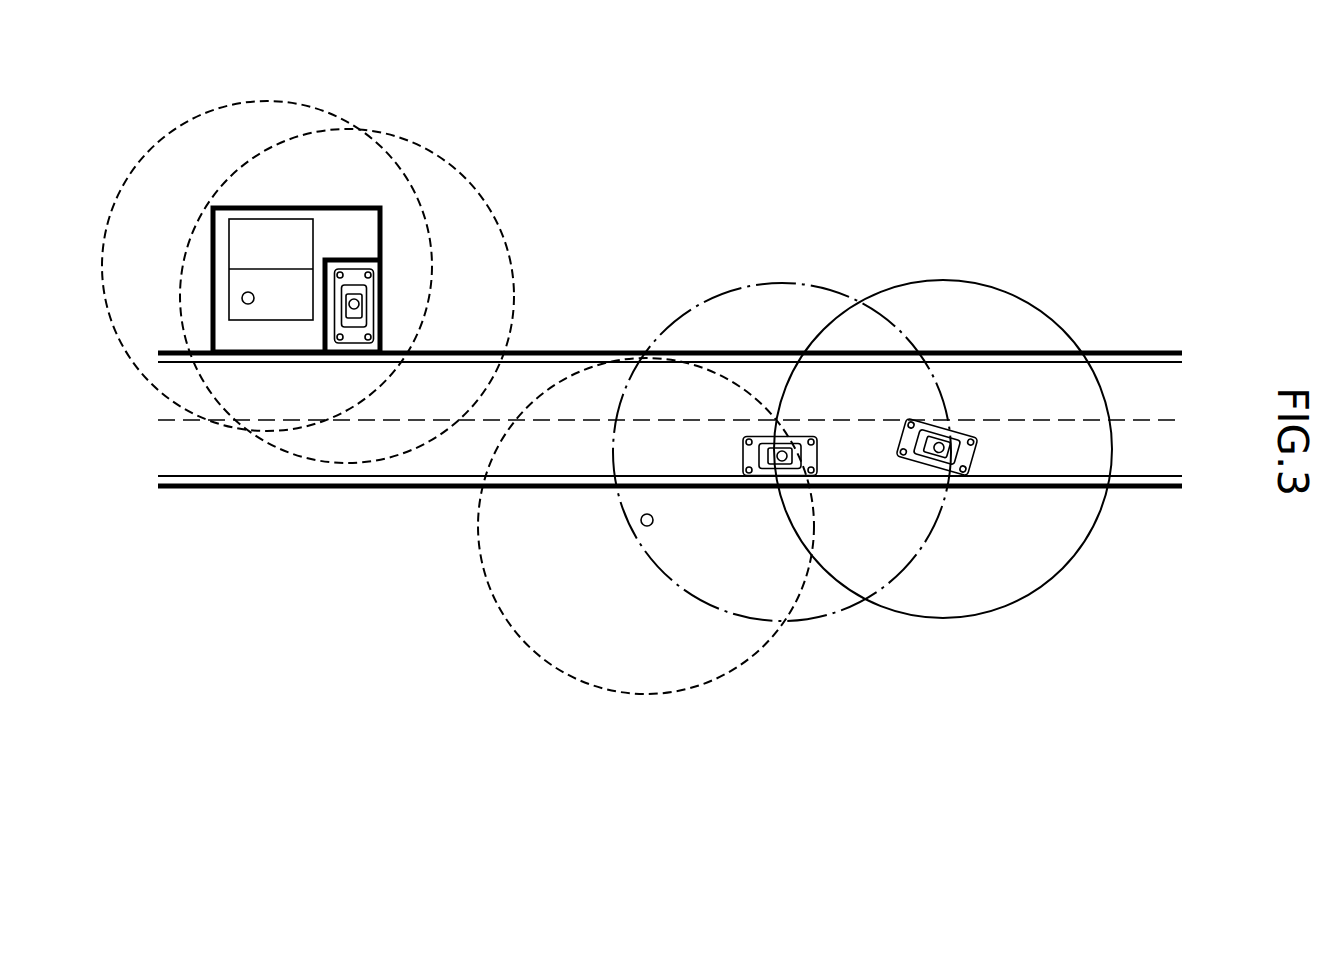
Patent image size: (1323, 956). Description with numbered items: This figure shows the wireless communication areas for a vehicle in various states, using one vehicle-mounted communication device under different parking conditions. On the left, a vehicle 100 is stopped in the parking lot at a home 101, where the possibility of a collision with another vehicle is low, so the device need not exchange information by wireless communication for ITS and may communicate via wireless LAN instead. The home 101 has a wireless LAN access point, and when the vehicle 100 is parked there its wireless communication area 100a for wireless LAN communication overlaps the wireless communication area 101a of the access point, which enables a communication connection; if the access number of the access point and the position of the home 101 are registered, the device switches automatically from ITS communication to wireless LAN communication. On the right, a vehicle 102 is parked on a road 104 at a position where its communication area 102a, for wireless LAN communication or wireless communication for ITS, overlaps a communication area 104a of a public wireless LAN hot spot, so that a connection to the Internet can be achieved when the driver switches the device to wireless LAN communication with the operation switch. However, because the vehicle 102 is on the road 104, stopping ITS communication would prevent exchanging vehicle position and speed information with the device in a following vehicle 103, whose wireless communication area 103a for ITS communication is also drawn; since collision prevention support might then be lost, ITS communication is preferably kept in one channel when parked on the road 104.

The vehicle 100 is at (373, 303).
The wireless communication area 100a is at (460, 174).
The home 101 is at (299, 203).
The wireless communication area 101a is at (207, 113).
The vehicle 102 is at (763, 440).
The communication area 102a is at (836, 617).
The following vehicle 103 is at (967, 430).
The wireless communication area 103a is at (1075, 555).
The road 104 is at (1147, 375).
The communication area 104a is at (648, 694).